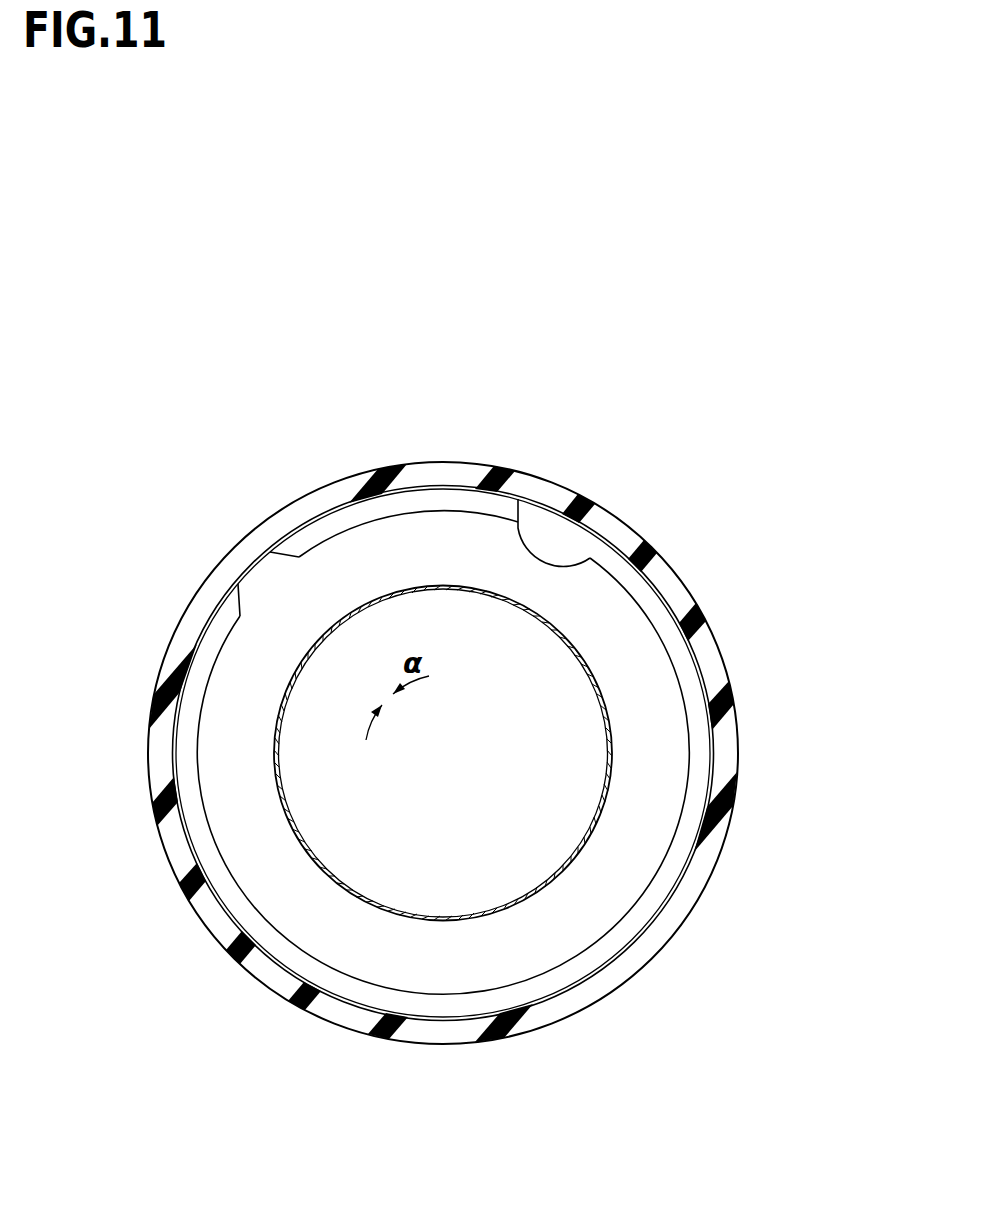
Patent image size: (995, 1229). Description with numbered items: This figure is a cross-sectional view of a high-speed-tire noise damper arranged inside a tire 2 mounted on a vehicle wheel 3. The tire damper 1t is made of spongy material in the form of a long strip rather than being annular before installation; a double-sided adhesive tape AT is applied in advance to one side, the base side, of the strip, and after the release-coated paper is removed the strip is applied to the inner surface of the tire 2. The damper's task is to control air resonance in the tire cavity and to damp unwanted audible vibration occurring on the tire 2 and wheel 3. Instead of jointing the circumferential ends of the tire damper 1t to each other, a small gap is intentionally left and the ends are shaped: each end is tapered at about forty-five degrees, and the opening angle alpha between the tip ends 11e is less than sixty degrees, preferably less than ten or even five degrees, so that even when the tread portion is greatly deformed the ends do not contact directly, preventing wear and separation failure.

The tire 2 is at (689, 573).
The vehicle wheel 3 is at (605, 690).
The tire damper 1t is at (703, 838).
The tip ends 11e is at (443, 753).
The double-sided adhesive tape AT is at (626, 521).